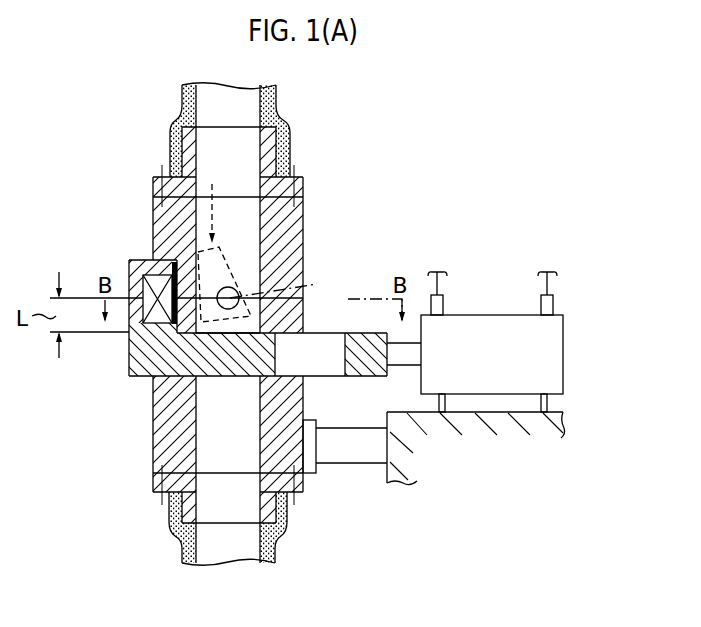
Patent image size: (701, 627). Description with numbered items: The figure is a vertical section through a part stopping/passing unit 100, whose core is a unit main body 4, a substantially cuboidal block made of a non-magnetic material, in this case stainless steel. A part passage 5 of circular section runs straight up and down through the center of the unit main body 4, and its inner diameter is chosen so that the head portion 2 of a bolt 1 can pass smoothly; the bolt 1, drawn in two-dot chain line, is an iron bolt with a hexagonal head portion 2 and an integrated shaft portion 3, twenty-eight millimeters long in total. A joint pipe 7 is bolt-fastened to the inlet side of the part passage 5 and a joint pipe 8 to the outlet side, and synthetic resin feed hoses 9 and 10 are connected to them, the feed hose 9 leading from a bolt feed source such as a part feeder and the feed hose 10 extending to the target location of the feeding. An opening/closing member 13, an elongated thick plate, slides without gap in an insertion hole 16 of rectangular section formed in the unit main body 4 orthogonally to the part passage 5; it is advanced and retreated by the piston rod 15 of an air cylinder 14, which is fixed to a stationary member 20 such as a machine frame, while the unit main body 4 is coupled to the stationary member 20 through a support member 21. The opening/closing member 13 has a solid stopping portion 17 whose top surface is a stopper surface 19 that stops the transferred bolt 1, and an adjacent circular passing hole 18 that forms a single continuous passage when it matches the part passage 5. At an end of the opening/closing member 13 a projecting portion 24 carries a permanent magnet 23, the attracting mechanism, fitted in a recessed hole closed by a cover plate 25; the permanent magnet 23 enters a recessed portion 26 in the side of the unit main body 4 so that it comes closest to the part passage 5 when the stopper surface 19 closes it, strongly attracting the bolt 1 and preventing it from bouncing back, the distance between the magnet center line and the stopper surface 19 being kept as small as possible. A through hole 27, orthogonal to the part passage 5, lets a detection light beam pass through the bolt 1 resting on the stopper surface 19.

The bolt 1 is at (212, 202).
The head portion 2 is at (281, 287).
The shaft portion 3 is at (219, 254).
The unit main body 4 is at (312, 234).
The part passage 5 is at (256, 219).
The joint pipe 7 is at (185, 145).
The joint pipe 8 is at (182, 509).
The feed hose 9 is at (182, 97).
The feed hose 10 is at (182, 550).
The opening/closing member 13 is at (382, 381).
The air cylinder 14 is at (563, 354).
The piston rod 15 is at (405, 332).
The insertion hole 16 is at (185, 373).
The stopping portion 17 is at (239, 362).
The passing hole 18 is at (349, 377).
The stopper surface 19 is at (248, 322).
The stationary member 20 is at (435, 412).
The support member 21 is at (350, 464).
The permanent magnet 23 is at (157, 328).
The projecting portion 24 is at (128, 266).
The cover plate 25 is at (185, 257).
The recessed portion 26 is at (166, 376).
The through hole 27 is at (291, 265).
The part stopping/passing unit 100 is at (343, 171).